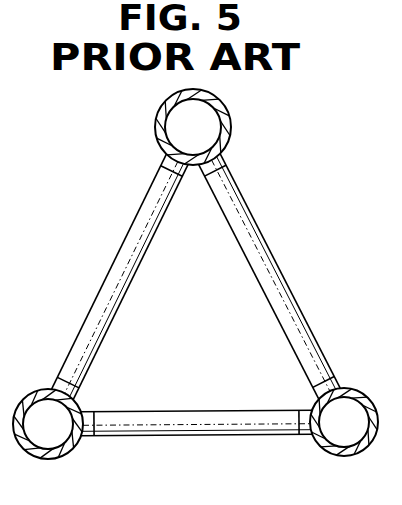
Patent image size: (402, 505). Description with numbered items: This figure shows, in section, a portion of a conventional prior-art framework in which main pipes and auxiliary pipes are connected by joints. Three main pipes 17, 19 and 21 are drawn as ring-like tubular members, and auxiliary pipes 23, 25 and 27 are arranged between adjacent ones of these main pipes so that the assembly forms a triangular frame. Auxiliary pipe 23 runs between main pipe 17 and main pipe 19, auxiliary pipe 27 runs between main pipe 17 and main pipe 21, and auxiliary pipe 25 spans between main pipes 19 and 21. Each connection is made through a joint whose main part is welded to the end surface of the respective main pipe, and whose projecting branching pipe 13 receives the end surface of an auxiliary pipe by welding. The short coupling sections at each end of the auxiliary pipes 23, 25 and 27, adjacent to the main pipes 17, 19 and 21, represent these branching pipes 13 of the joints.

The branching pipe 13 is at (163, 167).
The main pipe 17 is at (230, 125).
The main pipe 19 is at (71, 446).
The main pipe 21 is at (324, 445).
The auxiliary pipe 23 is at (125, 248).
The auxiliary pipe 25 is at (186, 416).
The auxiliary pipe 27 is at (270, 256).